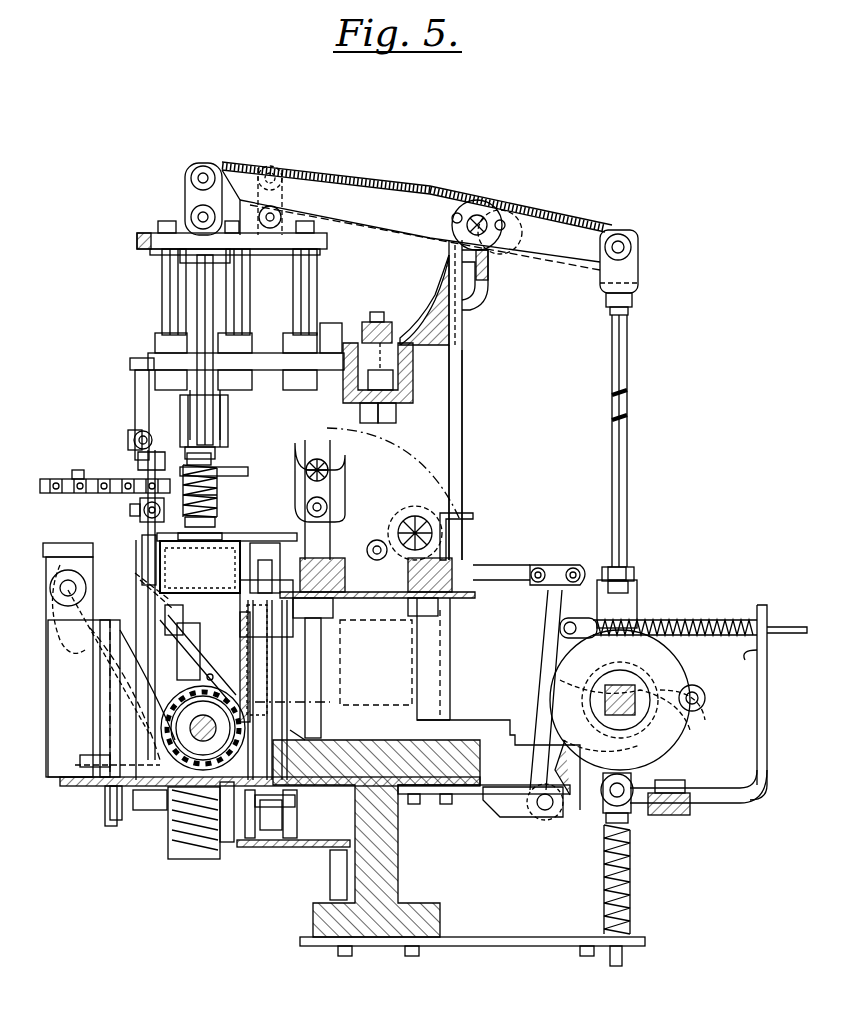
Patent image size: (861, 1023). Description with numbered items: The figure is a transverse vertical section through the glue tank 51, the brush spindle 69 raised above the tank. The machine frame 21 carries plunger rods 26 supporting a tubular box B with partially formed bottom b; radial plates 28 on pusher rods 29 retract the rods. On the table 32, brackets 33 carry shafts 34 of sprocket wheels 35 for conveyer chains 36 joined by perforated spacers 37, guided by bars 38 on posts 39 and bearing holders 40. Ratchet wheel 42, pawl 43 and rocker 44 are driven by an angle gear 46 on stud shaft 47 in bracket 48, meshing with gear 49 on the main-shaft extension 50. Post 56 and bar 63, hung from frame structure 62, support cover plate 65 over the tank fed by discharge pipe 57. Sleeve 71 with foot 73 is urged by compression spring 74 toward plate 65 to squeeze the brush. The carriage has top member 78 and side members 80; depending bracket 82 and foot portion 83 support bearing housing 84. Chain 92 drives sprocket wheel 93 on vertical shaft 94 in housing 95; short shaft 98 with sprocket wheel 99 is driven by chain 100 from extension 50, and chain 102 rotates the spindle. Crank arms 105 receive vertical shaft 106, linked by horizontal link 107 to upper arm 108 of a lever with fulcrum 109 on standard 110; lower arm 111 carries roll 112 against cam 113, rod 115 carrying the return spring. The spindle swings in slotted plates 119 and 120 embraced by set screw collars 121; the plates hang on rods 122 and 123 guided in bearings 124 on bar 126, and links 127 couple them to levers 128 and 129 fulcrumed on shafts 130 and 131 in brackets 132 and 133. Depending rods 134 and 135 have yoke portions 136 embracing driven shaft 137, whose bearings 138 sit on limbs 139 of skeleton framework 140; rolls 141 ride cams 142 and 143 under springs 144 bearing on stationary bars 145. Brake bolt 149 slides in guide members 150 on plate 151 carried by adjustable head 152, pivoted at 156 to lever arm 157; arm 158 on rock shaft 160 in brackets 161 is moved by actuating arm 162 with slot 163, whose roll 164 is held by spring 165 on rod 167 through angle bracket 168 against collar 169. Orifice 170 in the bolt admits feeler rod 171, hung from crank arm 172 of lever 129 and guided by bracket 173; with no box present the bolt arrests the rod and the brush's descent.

The supporting frame 21 is at (320, 918).
The plunger rods 26 is at (430, 490).
The radial plates 28 is at (340, 528).
The pusher rods 29 is at (382, 540).
The table 32 is at (68, 788).
The brackets 33 is at (305, 690).
The shafts 34 is at (322, 644).
The sprocket wheels 35 is at (300, 660).
The chains 36 is at (320, 605).
The perforated spacers 37 is at (292, 840).
The parallel bars 38 is at (290, 620).
The posts 39 is at (290, 724).
The holders 40 is at (262, 845).
The ratchet wheel 42 is at (150, 695).
The pawl 43 is at (188, 625).
The rocker 44 is at (172, 660).
The angle gear 46 is at (192, 862).
The stud shaft 47 is at (170, 820).
The depending bracket 48 is at (228, 848).
The gear 49 is at (332, 702).
The extension of the main shaft 50 is at (278, 812).
The liquid tank 51 is at (227, 563).
The post 56 is at (137, 558).
The vertical discharge pipe 57 is at (158, 598).
The frame structure 62 is at (413, 382).
The bar 63 is at (335, 426).
The plate 65 is at (142, 540).
The column 69 is at (195, 280).
The sleeve 71 is at (225, 505).
The frustro-conical foot 73 is at (205, 545).
The compression spring 74 is at (218, 492).
The top member 78 is at (212, 358).
The side members 80 is at (198, 403).
The depending bracket 82 is at (222, 472).
The angular foot portion 83 is at (248, 479).
The bearing housing 84 is at (148, 518).
The chain 92 is at (80, 478).
The sprocket wheel 93 is at (48, 482).
The vertical shaft 94 is at (65, 480).
The housing 95 is at (58, 548).
The short shaft 98 is at (62, 594).
The sprocket wheel 99 is at (50, 570).
The chain 100 is at (170, 680).
The chain 102 is at (185, 425).
The angular extensions 105 is at (148, 362).
The vertical shaft 106 is at (136, 385).
The horizontal link 107 is at (135, 433).
The upper arm 108 is at (140, 458).
The fulcrum 109 is at (80, 640).
The standard 110 is at (90, 732).
The lower arm 111 is at (165, 702).
The roll 112 is at (140, 785).
The cam 113 is at (135, 740).
The rod 115 is at (142, 498).
The plate 119 is at (137, 238).
The plate 120 is at (325, 244).
The set screw collars 121 is at (182, 255).
The depending rods 122 is at (162, 300).
The depending rods 123 is at (318, 300).
The vertical bearings 124 is at (328, 340).
The bar 126 is at (152, 350).
The links 127 is at (195, 170).
The lever 128 is at (228, 172).
The lever 129 is at (358, 170).
The shaft 130 is at (500, 225).
The shaft 131 is at (520, 232).
The bearing bracket 132 is at (462, 272).
The bearing bracket 133 is at (472, 310).
The depending rod 134 is at (620, 347).
The depending rod 135 is at (627, 410).
The yoke portion 136 is at (680, 618).
The driven shaft 137 is at (635, 690).
The bearings 138 is at (692, 786).
The limbs 139 is at (590, 805).
The skeleton framework 140 is at (695, 810).
The rolls 141 is at (635, 800).
The cam 142 is at (688, 738).
The cam 143 is at (640, 618).
The springs 144 is at (632, 915).
The stationary bars 145 is at (480, 947).
The bolt 149 is at (532, 565).
The guide members 150 is at (462, 588).
The plate 151 is at (460, 598).
The adjustable head 152 is at (450, 660).
The pivotal connection 156 is at (556, 575).
The lever arm 157 is at (628, 560).
The lever arm 158 is at (545, 735).
The rock shaft 160 is at (542, 810).
The brackets 161 is at (507, 818).
The actuating arm 162 is at (706, 700).
The slot 163 is at (690, 716).
The lateral roll 164 is at (685, 690).
The spring 165 is at (757, 645).
The rod 167 is at (770, 625).
The angle bracket 168 is at (752, 800).
The collar 169 is at (598, 602).
The orifice 170 is at (482, 565).
The feeler rod 171 is at (463, 408).
The crank arm 172 is at (477, 215).
The perforated bracket 173 is at (470, 515).
The tubular box B is at (330, 472).
The partially formed bottom b is at (432, 530).